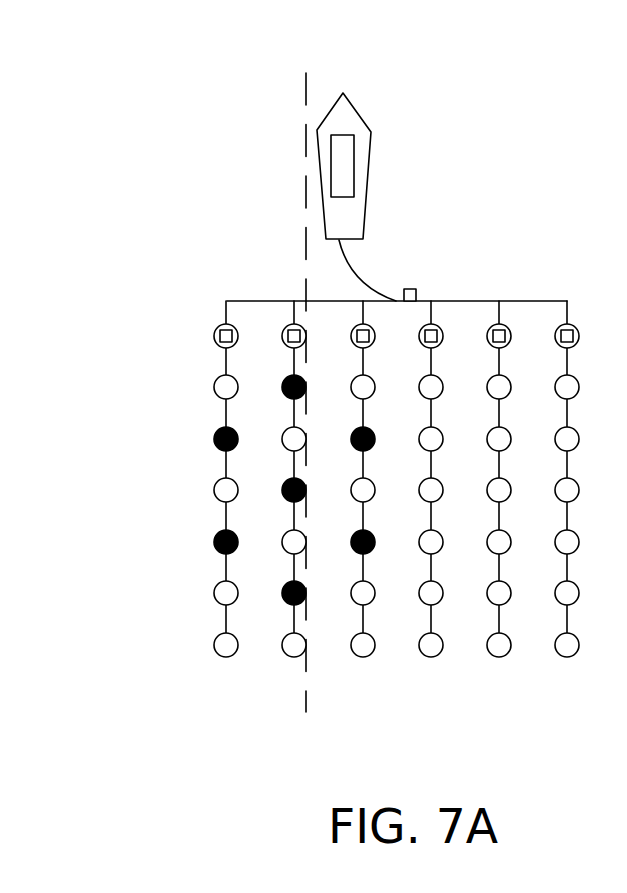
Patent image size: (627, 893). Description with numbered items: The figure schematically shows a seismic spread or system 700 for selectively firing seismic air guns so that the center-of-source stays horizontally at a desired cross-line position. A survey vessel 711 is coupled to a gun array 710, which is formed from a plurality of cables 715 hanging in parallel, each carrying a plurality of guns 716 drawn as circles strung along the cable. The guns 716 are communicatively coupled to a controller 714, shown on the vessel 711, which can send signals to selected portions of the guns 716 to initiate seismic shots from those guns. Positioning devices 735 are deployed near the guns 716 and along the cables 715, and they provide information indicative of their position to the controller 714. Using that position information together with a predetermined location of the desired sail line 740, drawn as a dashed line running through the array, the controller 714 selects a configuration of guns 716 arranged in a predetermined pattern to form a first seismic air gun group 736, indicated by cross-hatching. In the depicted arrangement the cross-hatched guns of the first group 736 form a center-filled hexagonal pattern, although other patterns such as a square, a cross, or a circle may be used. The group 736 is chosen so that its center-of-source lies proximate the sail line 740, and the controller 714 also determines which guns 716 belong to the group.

The seismic spread 700 is at (449, 86).
The sail line 740 is at (300, 210).
The survey vessel 711 is at (360, 226).
The controller 714 is at (355, 183).
The positioning device 735 is at (409, 288).
The gun array 710 is at (113, 381).
The cable 715 is at (222, 568).
The gun 716 is at (215, 386).
The first seismic air gun group 736 is at (210, 436).